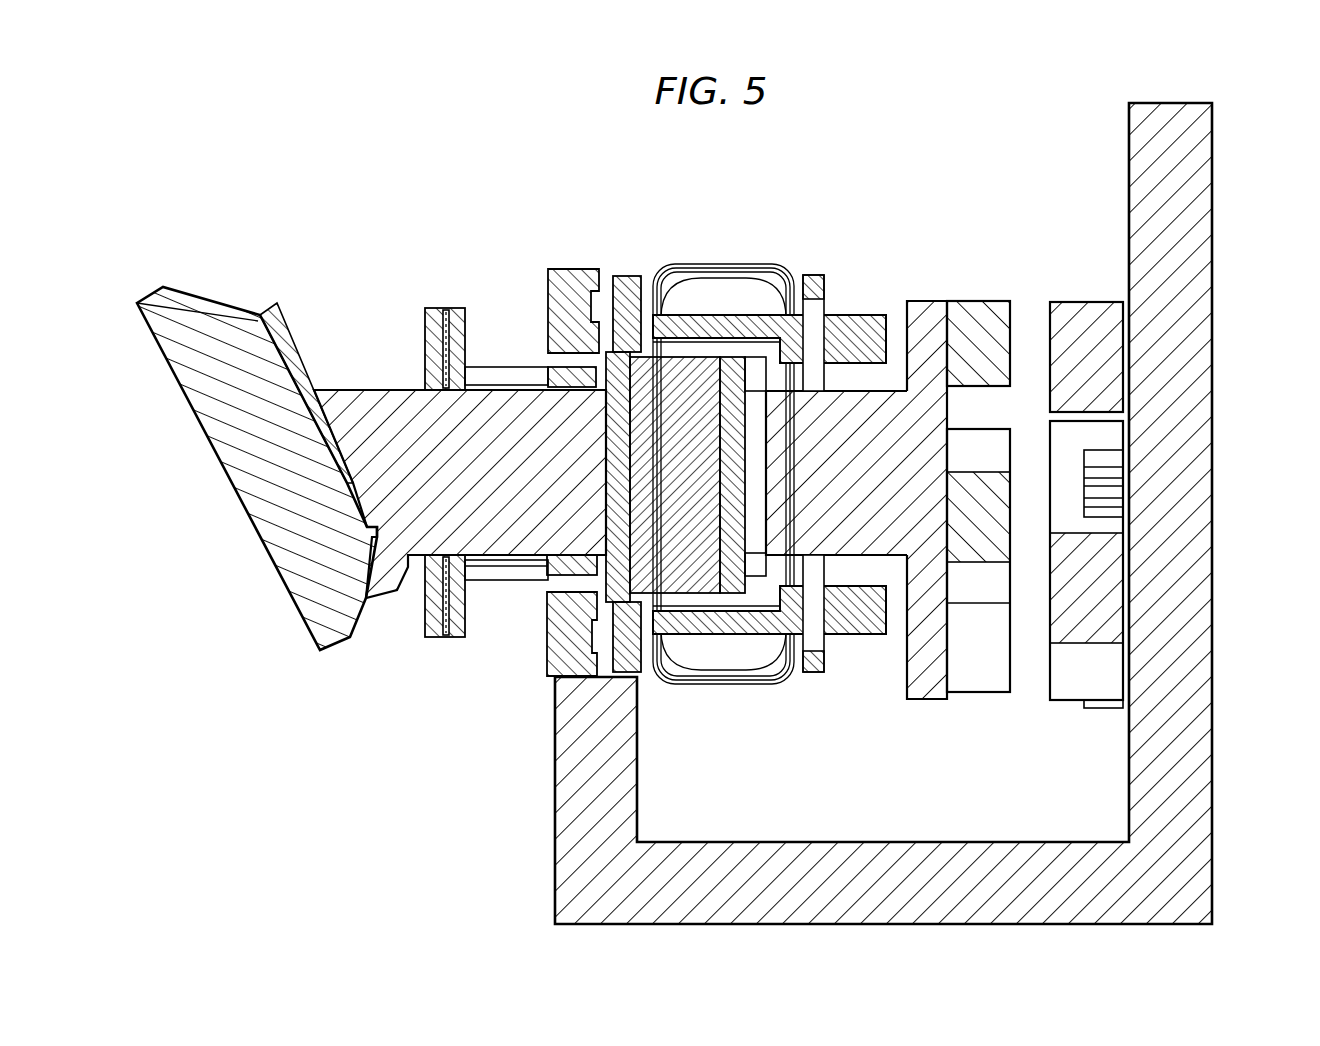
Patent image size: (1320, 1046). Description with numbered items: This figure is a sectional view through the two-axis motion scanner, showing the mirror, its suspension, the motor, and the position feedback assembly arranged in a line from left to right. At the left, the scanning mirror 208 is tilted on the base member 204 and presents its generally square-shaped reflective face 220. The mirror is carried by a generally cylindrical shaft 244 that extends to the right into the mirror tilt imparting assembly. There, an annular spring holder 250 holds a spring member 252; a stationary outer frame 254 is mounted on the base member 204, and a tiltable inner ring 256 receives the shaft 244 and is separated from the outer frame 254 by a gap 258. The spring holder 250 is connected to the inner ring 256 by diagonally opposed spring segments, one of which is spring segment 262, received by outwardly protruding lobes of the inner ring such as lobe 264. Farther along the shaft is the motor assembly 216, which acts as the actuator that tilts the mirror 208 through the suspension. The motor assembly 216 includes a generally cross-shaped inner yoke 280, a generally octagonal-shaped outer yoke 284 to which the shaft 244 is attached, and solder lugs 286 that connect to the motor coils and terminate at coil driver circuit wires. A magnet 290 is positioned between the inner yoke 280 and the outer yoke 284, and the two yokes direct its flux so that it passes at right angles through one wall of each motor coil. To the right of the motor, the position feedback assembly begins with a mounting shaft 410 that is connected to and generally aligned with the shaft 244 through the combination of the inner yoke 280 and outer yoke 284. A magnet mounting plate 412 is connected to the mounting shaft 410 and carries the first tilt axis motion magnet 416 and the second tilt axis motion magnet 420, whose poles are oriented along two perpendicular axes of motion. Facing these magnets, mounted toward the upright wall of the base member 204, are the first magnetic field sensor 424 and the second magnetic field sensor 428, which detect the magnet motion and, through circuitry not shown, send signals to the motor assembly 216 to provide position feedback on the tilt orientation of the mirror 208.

The base member 204 is at (1185, 462).
The scanning mirror 208 is at (245, 411).
The motor assembly 216 is at (769, 452).
The reflective face 220 is at (210, 480).
The shaft 244 is at (420, 525).
The spring holder 250 is at (437, 308).
The spring member 252 is at (445, 345).
The outer frame 254 is at (573, 270).
The inner ring 256 is at (588, 563).
The gap 258 is at (568, 583).
The spring segment 262 is at (505, 375).
The lobe 264 is at (508, 570).
The inner yoke 280 is at (686, 470).
The outer yoke 284 is at (622, 650).
The solder lug 286 is at (853, 328).
The magnet 290 is at (688, 565).
The mounting shaft 410 is at (783, 520).
The magnet mounting plate 412 is at (928, 682).
The first tilt axis motion magnet 416 is at (983, 674).
The second tilt axis motion magnet 420 is at (985, 302).
The first magnetic field sensor 424 is at (1108, 612).
The second magnetic field sensor 428 is at (1088, 320).